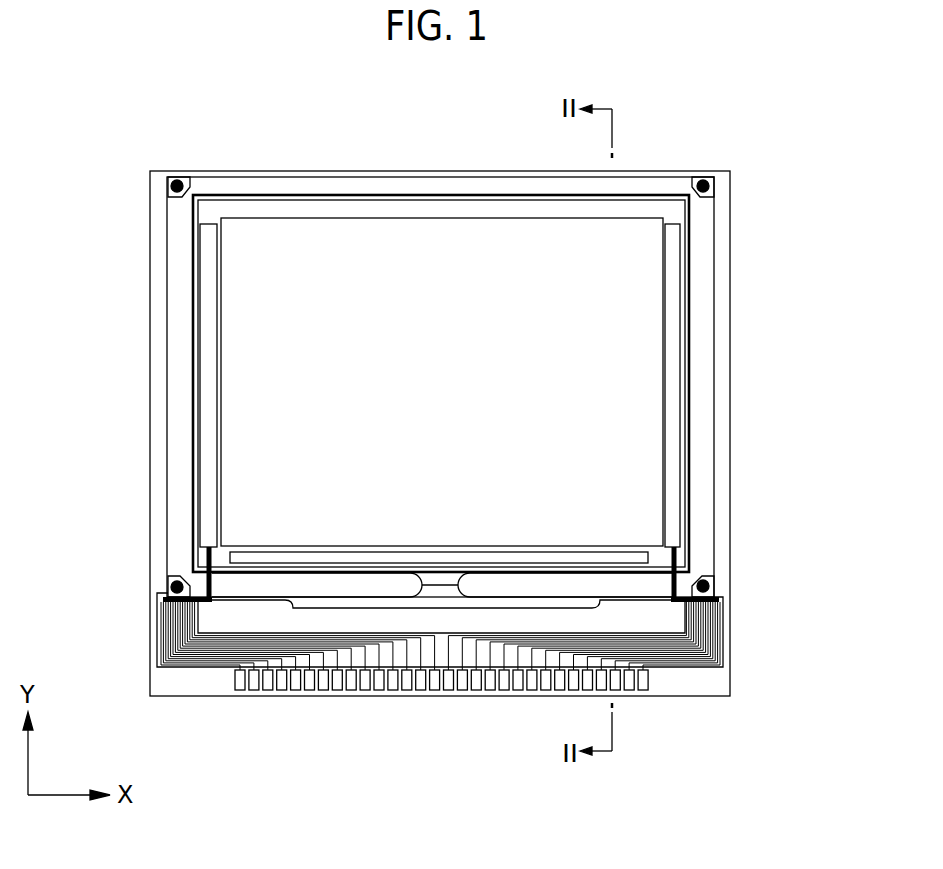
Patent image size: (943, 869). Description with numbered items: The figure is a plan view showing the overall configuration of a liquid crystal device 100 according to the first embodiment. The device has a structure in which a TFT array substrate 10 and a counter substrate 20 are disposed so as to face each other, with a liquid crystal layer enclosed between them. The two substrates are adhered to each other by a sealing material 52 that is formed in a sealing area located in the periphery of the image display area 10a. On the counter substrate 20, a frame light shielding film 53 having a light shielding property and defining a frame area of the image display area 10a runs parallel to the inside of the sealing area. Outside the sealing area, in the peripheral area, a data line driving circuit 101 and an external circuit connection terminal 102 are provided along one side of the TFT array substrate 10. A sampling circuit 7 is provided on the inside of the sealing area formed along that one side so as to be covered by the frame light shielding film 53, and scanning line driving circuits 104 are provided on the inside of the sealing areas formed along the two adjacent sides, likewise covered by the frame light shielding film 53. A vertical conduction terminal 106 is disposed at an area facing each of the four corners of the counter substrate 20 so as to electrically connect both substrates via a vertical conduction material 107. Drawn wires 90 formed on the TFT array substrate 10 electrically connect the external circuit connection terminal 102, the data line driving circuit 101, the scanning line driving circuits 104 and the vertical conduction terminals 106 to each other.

The liquid crystal device 100 is at (440, 400).
The TFT array substrate 10 is at (273, 172).
The image display area 10a is at (263, 340).
The counter substrate 20 is at (462, 177).
The sealing material 52 is at (703, 319).
The frame light shielding film 53 is at (682, 552).
The scanning line driving circuit 104 is at (676, 382).
The sampling circuit 7 is at (585, 557).
The vertical conduction terminal 106 is at (190, 187).
The vertical conduction material 107 is at (168, 591).
The drawn wires 90 is at (157, 647).
The data line driving circuit 101 is at (218, 627).
The external circuit connection terminal 102 is at (407, 678).